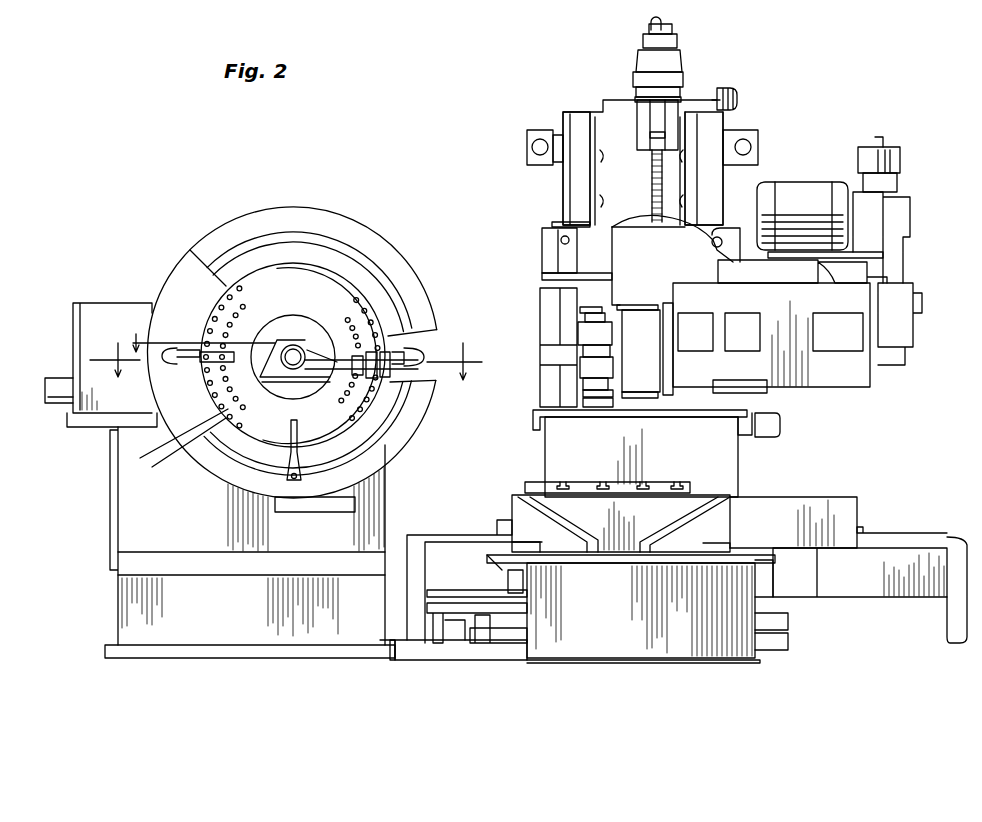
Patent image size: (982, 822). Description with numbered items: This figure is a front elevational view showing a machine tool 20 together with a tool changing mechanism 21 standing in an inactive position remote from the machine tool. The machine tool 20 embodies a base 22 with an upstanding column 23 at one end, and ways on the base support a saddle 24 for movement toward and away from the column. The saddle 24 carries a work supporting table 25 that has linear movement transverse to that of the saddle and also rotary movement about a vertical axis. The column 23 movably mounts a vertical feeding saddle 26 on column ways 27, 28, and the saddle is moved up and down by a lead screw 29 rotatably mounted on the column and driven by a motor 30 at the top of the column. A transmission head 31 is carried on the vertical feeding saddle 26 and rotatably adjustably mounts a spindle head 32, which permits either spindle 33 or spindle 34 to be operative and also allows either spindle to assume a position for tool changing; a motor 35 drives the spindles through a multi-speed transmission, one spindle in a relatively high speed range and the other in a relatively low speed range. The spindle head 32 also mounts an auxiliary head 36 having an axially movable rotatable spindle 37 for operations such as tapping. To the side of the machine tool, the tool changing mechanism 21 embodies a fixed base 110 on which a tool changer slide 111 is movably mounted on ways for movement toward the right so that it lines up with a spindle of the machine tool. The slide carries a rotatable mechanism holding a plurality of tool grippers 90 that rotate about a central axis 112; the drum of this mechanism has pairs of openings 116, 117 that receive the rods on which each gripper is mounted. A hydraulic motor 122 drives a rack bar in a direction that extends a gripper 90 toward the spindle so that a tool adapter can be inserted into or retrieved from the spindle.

The machine tool 20 is at (808, 427).
The tool changing mechanism 21 is at (408, 229).
The base 22 is at (735, 650).
The column 23 is at (567, 112).
The saddle 24 is at (490, 557).
The work supporting table 25 is at (518, 495).
The vertical feeding saddle 26 is at (548, 235).
The column way 27 is at (563, 182).
The column way 28 is at (718, 138).
The lead screw 29 is at (663, 135).
The motor 30 is at (668, 62).
The transmission head 31 is at (850, 370).
The spindle head 32 is at (638, 317).
The spindle 33 is at (627, 302).
The spindle 34 is at (650, 400).
The motor 35 is at (813, 185).
The auxiliary head 36 is at (592, 330).
The axially movable rotatable spindle 37 is at (600, 398).
The tool gripper 90 is at (177, 367).
The fixed base 110 is at (292, 645).
The tool changer slide 111 is at (103, 307).
The central axis 112 is at (296, 354).
The opening 116 is at (184, 447).
The opening 117 is at (243, 392).
The hydraulic motor 122 is at (350, 382).